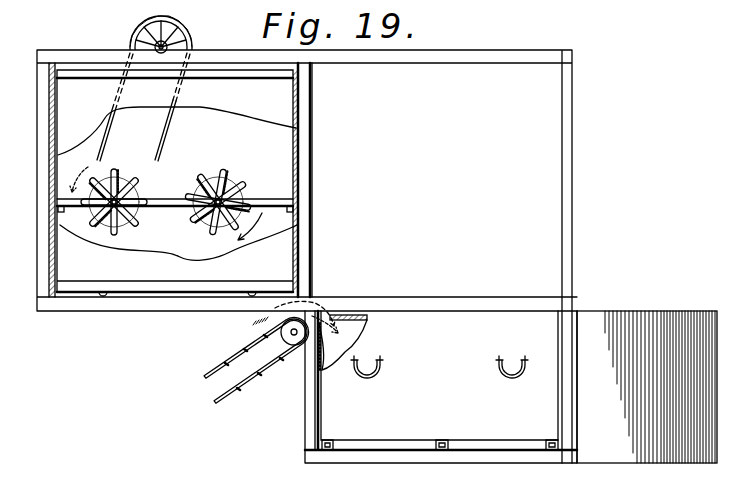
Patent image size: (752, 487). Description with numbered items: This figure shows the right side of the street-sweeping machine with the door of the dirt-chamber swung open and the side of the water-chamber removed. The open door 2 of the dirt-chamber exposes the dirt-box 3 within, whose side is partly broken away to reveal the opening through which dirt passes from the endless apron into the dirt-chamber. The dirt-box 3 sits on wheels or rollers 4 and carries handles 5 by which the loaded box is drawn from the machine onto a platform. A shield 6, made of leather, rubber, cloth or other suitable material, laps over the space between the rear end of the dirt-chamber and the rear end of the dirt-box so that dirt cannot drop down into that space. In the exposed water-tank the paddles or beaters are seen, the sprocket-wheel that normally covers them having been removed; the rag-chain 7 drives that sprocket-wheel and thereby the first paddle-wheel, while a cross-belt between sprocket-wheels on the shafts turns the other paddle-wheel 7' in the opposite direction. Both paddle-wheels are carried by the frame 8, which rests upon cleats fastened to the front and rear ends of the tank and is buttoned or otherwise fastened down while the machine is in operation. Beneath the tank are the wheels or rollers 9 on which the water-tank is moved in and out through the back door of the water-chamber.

The open door of the dirt-chamber 2 is at (647, 387).
The dirt-box 3 is at (432, 369).
The wheels or rollers 4 is at (333, 442).
The handles 5 is at (367, 380).
The shield 6 is at (347, 350).
The rag-chain 7 is at (143, 107).
The agitators 7' is at (166, 196).
The frame which supports the paddle-wheels 8 is at (267, 199).
The wheels or rollers 9 is at (105, 299).